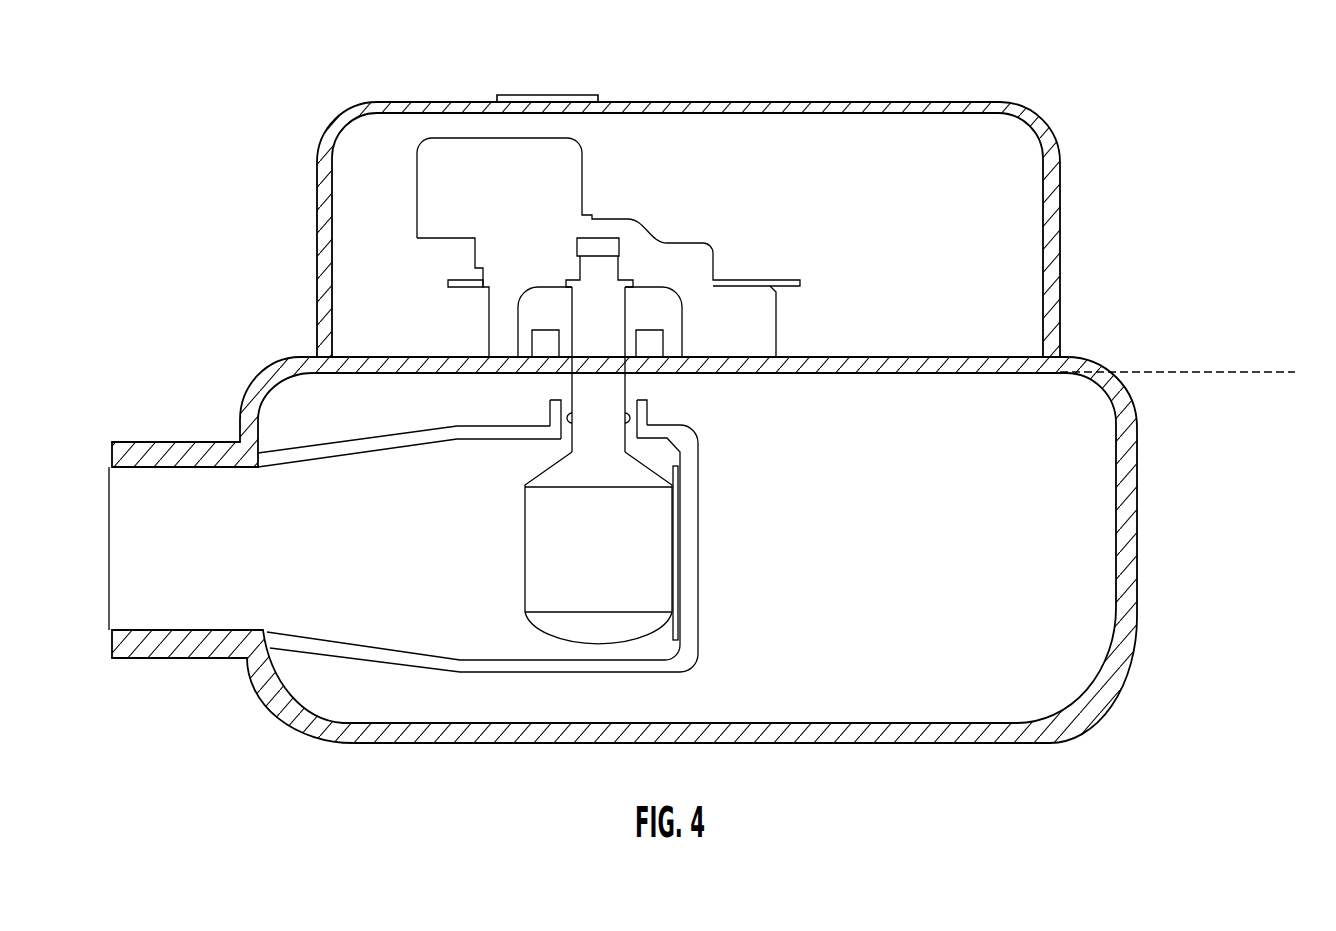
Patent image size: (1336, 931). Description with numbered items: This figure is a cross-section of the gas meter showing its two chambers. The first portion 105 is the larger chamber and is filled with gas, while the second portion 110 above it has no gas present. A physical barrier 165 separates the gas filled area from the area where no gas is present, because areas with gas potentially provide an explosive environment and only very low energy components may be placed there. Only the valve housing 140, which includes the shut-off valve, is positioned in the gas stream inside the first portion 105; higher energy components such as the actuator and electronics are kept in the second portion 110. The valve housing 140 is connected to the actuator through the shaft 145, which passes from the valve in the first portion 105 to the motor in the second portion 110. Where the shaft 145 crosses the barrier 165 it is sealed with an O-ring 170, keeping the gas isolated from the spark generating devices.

The first portion 105 is at (1033, 668).
The second portion 110 is at (1023, 257).
The valve housing 140 is at (468, 603).
The shaft 145 is at (585, 405).
The barrier 165 is at (1262, 449).
The O-ring 170 is at (637, 343).